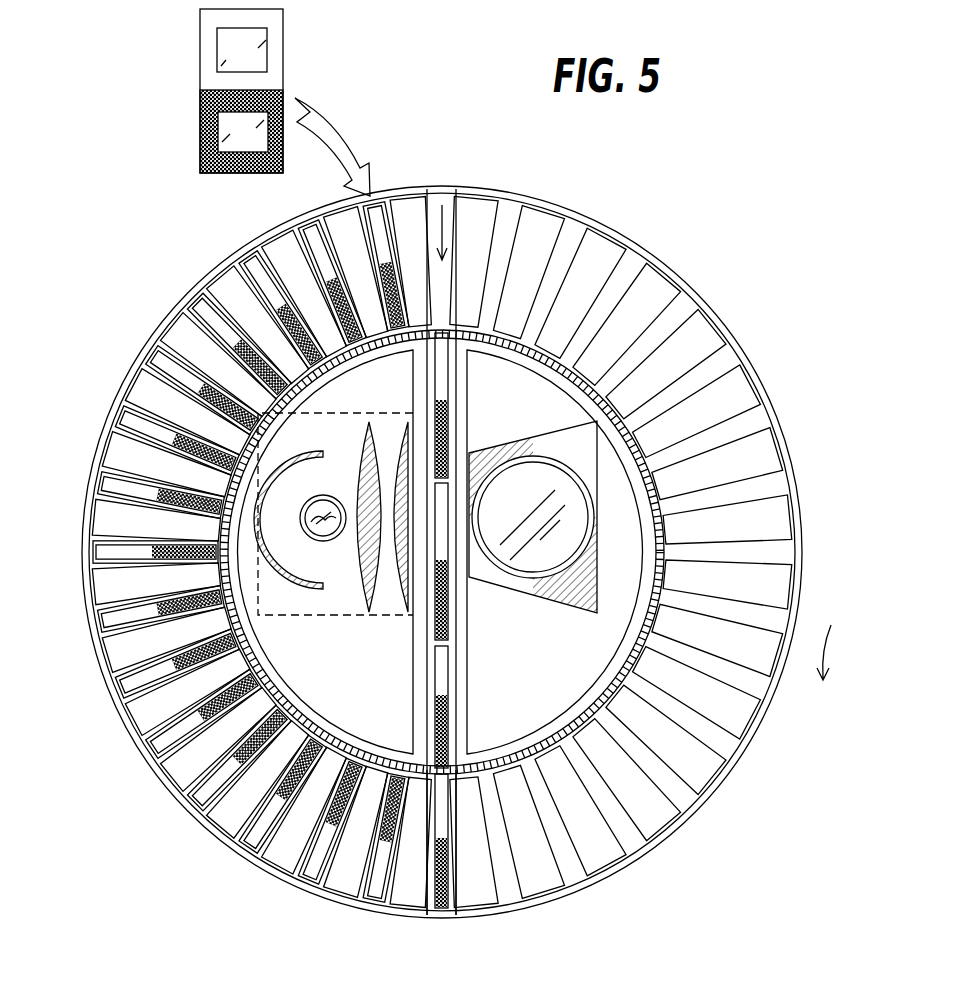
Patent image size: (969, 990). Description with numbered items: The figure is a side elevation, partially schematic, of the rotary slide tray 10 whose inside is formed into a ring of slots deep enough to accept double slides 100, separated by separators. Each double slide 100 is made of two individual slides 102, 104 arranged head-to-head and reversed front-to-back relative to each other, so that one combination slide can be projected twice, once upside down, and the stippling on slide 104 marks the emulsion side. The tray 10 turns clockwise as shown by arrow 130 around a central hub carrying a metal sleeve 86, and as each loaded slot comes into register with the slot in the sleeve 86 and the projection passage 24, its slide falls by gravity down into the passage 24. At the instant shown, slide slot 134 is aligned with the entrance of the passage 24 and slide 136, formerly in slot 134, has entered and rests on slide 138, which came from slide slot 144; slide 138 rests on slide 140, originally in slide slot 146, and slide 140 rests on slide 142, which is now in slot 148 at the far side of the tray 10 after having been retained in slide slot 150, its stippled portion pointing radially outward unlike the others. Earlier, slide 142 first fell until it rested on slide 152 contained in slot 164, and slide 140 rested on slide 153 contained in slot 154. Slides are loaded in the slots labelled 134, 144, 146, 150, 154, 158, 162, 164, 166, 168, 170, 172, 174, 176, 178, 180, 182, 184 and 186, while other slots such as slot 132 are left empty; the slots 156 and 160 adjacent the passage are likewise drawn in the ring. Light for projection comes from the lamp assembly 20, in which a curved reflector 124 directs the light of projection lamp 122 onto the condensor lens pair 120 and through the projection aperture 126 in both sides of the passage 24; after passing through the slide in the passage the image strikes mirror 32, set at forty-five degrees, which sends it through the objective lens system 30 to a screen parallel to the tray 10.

The rotary slide tray 10 is at (738, 340).
The lamp assembly 20 is at (309, 638).
The projection passage 24 is at (443, 327).
The objective lens system 30 is at (595, 522).
The mirror 32 is at (572, 610).
The metal sleeve 86 is at (656, 568).
The double slide 100 is at (306, 44).
The individual slide 102 is at (200, 46).
The individual slide 104 is at (200, 136).
The condensor lens pair 120 is at (368, 614).
The projection lamp 122 is at (323, 541).
The curved reflector 124 is at (317, 447).
The projection aperture 126 is at (397, 424).
The arrow 130 is at (834, 650).
The slot 132 is at (512, 892).
The slide slot 134 is at (447, 230).
The slide 136 is at (448, 398).
The slide 138 is at (452, 610).
The slide 140 is at (452, 714).
The slide 142 is at (437, 914).
The slide slot 144 is at (508, 232).
The slide slot 146 is at (565, 245).
The slot 148 is at (448, 914).
The slide slot 150 is at (622, 283).
The slide 152 is at (246, 846).
The slide 153 is at (300, 882).
The slot 154 is at (346, 880).
The filter strip 156 is at (380, 906).
The slot 158 is at (395, 892).
The slot 160 is at (381, 196).
The slot 162 is at (262, 853).
The slot 164 is at (202, 820).
The slot 166 is at (152, 778).
The slot 168 is at (118, 706).
The slot 170 is at (88, 640).
The slot 172 is at (82, 560).
The slot 174 is at (82, 505).
The slot 176 is at (95, 428).
The slot 178 is at (137, 366).
The slot 180 is at (180, 313).
The slot 182 is at (237, 254).
The slot 184 is at (290, 227).
The slot 186 is at (362, 198).